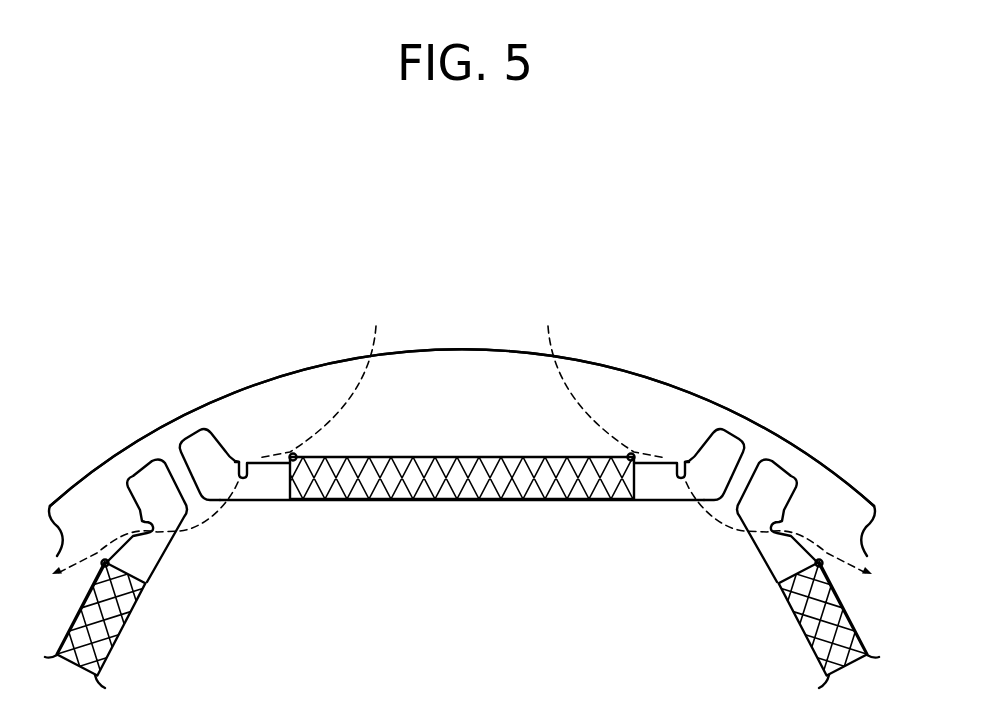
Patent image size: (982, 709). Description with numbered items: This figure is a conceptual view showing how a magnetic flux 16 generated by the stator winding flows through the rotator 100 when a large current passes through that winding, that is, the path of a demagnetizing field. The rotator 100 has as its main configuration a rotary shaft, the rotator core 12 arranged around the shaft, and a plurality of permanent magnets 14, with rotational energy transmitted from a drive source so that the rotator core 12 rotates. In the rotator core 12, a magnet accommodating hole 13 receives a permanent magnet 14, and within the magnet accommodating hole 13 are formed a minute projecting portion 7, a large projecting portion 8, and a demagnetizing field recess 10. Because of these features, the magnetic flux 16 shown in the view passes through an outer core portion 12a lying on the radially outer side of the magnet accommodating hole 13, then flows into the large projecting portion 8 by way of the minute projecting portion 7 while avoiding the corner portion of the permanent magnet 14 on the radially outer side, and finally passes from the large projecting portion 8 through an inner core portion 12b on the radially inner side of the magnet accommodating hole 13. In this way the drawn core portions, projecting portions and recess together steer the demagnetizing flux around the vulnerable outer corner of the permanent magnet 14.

The rotator 100 is at (130, 173).
The rotator core 12 is at (236, 388).
The outer core portion 12a is at (457, 402).
The inner core portion 12b is at (457, 523).
The magnetic flux 16 is at (358, 388).
The demagnetizing field recess 10 is at (291, 453).
The magnet accommodating hole 13 is at (727, 445).
The large projecting portion 8 is at (243, 490).
The minute projecting portion 7 is at (266, 470).
The permanent magnet 14 is at (604, 500).